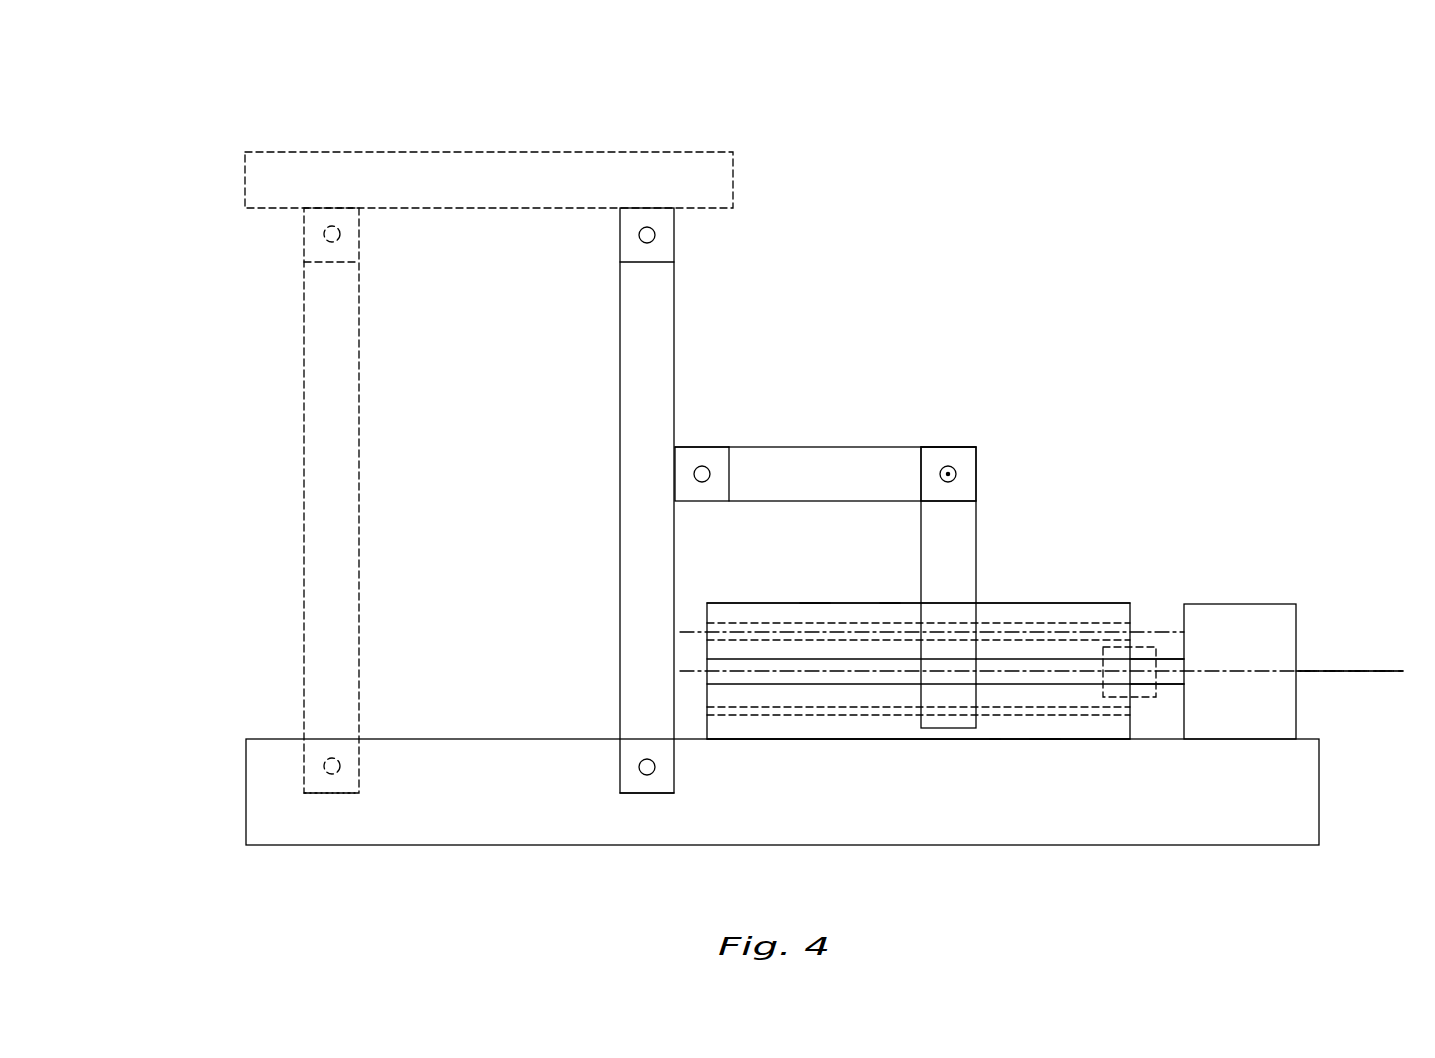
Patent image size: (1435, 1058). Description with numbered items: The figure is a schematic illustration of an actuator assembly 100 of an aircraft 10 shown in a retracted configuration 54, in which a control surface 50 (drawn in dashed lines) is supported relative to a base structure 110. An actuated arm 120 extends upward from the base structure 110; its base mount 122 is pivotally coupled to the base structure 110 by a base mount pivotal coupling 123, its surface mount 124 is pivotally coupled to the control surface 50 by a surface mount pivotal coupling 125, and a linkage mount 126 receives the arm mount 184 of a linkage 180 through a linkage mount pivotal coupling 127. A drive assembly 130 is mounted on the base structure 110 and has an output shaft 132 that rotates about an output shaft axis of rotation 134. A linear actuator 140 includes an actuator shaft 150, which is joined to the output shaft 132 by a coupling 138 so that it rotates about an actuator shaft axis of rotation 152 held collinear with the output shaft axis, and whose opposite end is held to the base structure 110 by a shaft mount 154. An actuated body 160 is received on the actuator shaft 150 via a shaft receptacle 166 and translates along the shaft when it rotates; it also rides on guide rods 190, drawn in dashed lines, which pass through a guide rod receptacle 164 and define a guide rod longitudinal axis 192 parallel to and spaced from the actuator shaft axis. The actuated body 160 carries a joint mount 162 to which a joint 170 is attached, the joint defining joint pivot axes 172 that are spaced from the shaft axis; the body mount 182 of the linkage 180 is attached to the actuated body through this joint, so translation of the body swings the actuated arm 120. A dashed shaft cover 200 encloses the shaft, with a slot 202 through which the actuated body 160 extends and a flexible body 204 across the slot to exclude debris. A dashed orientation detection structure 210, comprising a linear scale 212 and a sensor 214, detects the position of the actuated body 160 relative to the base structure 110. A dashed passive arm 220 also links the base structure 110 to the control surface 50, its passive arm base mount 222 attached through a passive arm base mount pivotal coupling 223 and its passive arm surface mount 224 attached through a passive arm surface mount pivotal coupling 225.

The aircraft 10 is at (203, 82).
The actuator assembly 100 is at (193, 133).
The retracted configuration 54 is at (1057, 288).
The control surface 50 is at (449, 148).
The passive arm 220 is at (301, 443).
The passive arm surface mount 224 is at (360, 246).
The passive arm surface mount pivotal coupling 225 is at (323, 234).
The passive arm base mount pivotal coupling 223 is at (323, 767).
The passive arm base mount 222 is at (360, 764).
The actuated arm 120 is at (618, 368).
The surface mount 124 is at (619, 237).
The surface mount pivotal coupling 125 is at (656, 235).
The base mount pivotal coupling 123 is at (638, 767).
The base mount 122 is at (675, 760).
The linkage 180 is at (836, 445).
The linkage mount 126 is at (683, 446).
The linkage mount pivotal coupling 127 is at (702, 465).
The arm mount 184 is at (729, 473).
The body mount 182 is at (920, 465).
The joint 170 is at (955, 445).
The joint pivot axes 172 is at (957, 474).
The actuated body 160 is at (980, 520).
The joint mount 162 is at (948, 502).
The linear actuator 140 is at (1082, 601).
The shaft mount 154 is at (712, 599).
The flexible body 204 is at (828, 599).
The slot 202 is at (912, 597).
The shaft cover 200 is at (1017, 603).
The guide rods 190 is at (800, 624).
The guide rod receptacle 164 is at (944, 622).
The shaft receptacle 166 is at (958, 710).
The orientation detection structure 210 is at (990, 741).
The linear scale 212 is at (1005, 740).
The sensor 214 is at (1050, 740).
The actuator shaft 150 is at (1091, 677).
The guide rod longitudinal axis 192 is at (1152, 630).
The output shaft 132 is at (1176, 657).
The coupling 138 is at (1158, 697).
The drive assembly 130 is at (1302, 634).
The actuator shaft axis of rotation 152 is at (1366, 673).
The output shaft axis of rotation 134 is at (1343, 673).
The base structure 110 is at (508, 848).